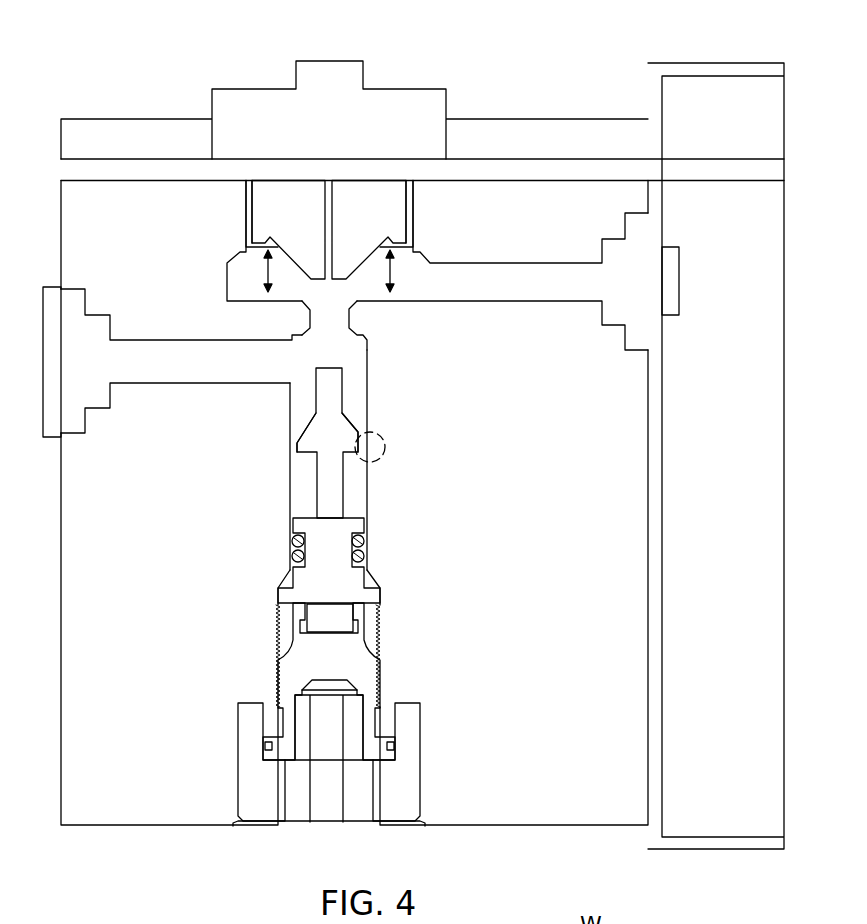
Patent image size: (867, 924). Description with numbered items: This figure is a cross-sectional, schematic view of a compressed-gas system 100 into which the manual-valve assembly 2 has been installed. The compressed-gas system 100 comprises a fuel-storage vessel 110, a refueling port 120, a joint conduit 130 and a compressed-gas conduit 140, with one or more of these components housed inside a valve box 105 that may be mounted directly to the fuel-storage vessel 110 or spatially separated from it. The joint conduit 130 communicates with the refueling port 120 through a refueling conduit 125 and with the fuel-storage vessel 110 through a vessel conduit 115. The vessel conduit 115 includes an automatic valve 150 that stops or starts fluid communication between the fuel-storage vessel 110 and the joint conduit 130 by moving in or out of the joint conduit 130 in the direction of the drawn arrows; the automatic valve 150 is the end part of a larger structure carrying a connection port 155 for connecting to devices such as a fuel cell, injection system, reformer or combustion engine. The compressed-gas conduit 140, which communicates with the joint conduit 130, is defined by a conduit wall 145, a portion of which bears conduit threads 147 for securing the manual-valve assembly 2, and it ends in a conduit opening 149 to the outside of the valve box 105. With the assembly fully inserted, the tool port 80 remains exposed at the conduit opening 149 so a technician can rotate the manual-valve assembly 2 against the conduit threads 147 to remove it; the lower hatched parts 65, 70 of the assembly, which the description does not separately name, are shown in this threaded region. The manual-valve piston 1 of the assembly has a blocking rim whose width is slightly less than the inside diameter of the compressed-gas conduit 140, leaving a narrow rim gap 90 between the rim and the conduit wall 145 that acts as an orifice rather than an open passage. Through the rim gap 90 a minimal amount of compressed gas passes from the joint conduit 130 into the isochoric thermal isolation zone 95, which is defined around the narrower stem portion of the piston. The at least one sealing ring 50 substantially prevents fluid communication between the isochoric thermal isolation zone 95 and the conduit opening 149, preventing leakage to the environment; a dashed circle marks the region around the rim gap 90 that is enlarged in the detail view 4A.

The compressed-gas system 100 is at (127, 66).
The valve box 105 is at (62, 812).
The fuel-storage vessel 110 is at (738, 479).
The vessel conduit 115 is at (492, 296).
The refueling port 120 is at (48, 287).
The refueling conduit 125 is at (184, 374).
The joint conduit 130 is at (327, 315).
The compressed-gas conduit 140 is at (348, 361).
The conduit wall 145 is at (370, 396).
The conduit threads 147 is at (382, 620).
The conduit opening 149 is at (383, 824).
The automatic valve 150 is at (268, 212).
The connection port 155 is at (330, 60).
The rim gap 90 is at (294, 447).
The isochoric thermal isolation zone 95 is at (355, 474).
The manual-valve piston 1 is at (300, 578).
The manual-valve assembly 2 is at (182, 593).
The sealing ring 50 is at (296, 541).
The lower fitting 65 is at (248, 746).
The packing nut 70 is at (292, 662).
The tool port 80 is at (327, 800).
The detail view 4A is at (386, 446).